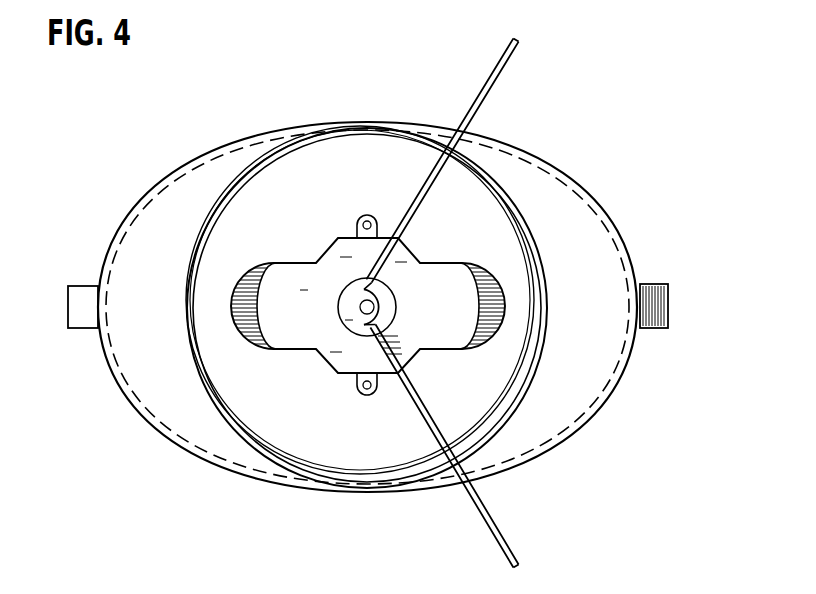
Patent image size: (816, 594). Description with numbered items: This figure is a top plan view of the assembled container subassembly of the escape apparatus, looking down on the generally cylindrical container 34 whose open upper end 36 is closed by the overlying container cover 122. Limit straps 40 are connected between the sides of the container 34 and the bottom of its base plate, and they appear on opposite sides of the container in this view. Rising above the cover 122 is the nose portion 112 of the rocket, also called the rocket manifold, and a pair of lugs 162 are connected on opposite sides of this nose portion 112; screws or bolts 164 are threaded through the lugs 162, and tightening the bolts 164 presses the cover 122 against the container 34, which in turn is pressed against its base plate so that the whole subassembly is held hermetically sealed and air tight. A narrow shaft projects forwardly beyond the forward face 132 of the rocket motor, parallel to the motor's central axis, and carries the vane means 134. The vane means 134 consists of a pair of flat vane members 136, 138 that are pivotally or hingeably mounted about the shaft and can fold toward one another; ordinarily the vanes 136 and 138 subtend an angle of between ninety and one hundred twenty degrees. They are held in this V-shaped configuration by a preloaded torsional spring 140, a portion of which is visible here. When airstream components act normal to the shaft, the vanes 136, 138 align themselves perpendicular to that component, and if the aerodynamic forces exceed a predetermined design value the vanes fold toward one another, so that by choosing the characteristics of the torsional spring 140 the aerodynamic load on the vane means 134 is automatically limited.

The container 34 is at (578, 197).
The open upper end 36 is at (191, 352).
The limit straps 40 is at (78, 298).
The nose portion 112 is at (474, 263).
The container cover 122 is at (497, 378).
The forward face 132 is at (290, 276).
The vane means 134 is at (477, 530).
The vane member 136 is at (505, 539).
The vane member 138 is at (478, 91).
The torsional spring 140 is at (389, 313).
The lugs 162 is at (360, 226).
The bolts 164 is at (367, 214).